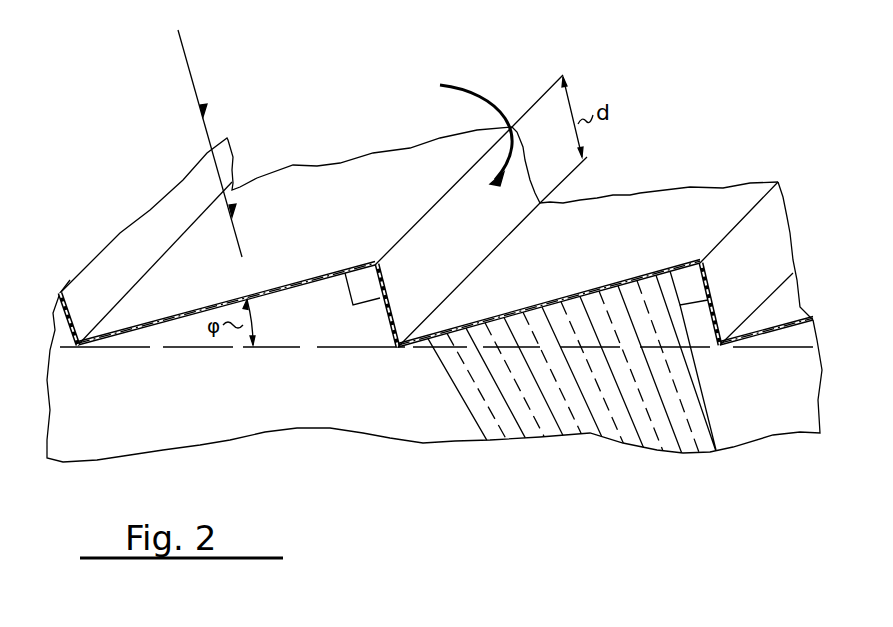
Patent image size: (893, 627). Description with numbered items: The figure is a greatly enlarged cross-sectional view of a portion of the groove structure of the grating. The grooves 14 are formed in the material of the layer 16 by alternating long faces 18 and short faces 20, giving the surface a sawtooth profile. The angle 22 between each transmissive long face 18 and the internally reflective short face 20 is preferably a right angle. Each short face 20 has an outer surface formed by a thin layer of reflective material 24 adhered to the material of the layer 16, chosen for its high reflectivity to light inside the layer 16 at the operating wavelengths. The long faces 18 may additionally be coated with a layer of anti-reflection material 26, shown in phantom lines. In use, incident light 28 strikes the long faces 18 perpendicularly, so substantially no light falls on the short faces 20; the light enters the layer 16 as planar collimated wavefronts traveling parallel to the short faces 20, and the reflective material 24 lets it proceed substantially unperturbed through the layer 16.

The grooves 14 is at (461, 130).
The layer 16 is at (397, 408).
The long face 18 is at (310, 236).
The short face 20 is at (489, 231).
The angle 22 is at (352, 306).
The reflective material 24 is at (380, 299).
The anti-reflection material 26 is at (187, 308).
The incident light 28 is at (190, 48).